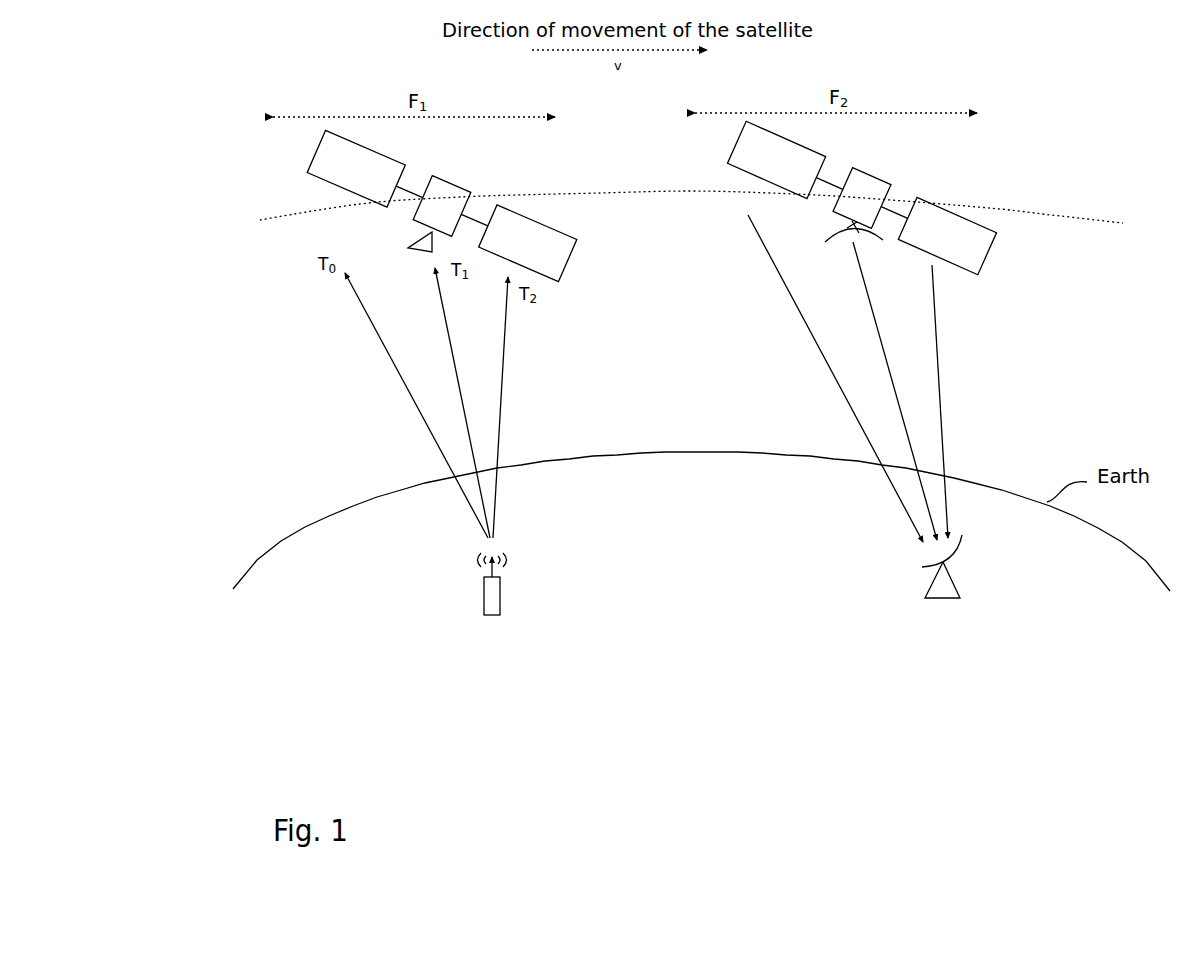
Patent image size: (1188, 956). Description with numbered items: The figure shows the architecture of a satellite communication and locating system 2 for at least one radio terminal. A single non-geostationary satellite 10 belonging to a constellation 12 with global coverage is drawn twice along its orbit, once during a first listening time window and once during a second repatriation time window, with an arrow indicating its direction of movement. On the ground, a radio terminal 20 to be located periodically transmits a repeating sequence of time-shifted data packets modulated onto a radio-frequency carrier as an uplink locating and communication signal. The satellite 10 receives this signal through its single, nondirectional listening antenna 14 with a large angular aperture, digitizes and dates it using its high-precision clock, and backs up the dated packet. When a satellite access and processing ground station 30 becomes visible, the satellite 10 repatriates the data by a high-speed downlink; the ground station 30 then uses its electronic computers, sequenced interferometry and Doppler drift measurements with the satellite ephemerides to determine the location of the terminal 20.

The satellite communication and locating system 2 is at (447, 632).
The non-geostationary satellite 10 is at (452, 182).
The constellation 12 is at (252, 133).
The listening antenna 14 is at (410, 232).
The radio terminal 20 is at (502, 595).
The satellite access and processing ground station 30 is at (958, 585).